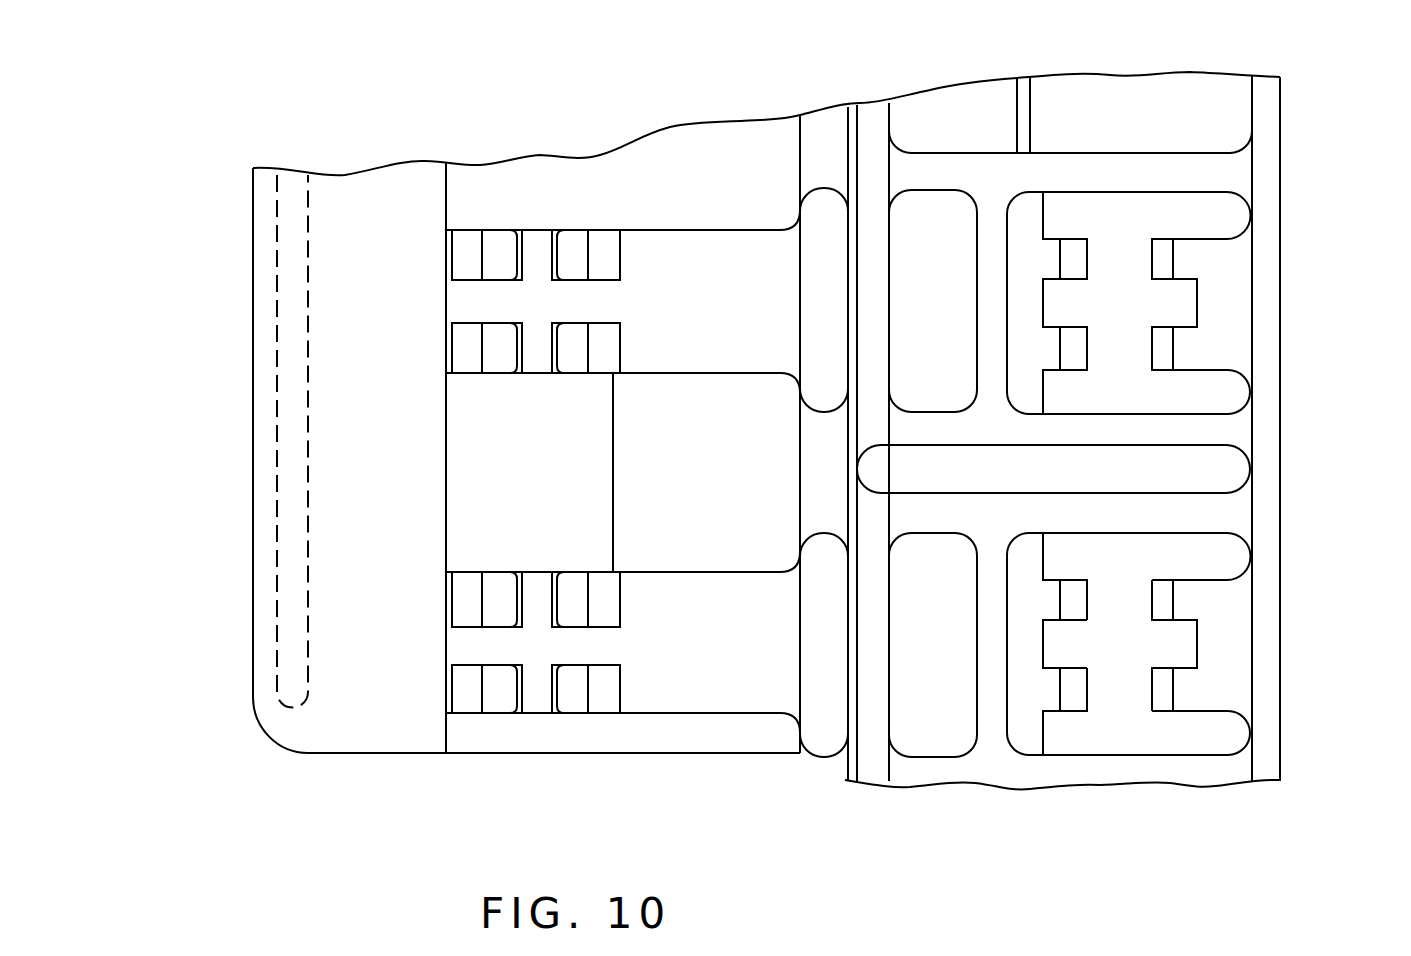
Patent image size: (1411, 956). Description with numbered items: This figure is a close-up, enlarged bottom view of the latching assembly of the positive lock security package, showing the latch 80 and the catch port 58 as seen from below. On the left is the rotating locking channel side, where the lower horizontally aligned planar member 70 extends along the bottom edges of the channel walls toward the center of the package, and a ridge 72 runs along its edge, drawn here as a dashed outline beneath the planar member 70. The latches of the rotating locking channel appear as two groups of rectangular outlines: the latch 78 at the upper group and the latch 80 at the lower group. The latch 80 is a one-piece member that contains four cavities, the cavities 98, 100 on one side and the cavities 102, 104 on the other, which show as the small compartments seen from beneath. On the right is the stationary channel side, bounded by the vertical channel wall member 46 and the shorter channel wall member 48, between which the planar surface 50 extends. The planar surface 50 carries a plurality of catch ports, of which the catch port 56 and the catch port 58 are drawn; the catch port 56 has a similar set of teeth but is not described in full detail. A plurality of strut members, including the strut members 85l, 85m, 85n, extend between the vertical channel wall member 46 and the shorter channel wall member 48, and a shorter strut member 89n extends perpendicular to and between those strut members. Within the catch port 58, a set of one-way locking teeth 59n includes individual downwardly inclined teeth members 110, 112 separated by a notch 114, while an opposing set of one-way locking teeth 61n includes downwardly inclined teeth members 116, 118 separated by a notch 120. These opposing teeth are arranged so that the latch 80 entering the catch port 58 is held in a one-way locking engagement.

The vertical channel wall member 46 is at (1265, 343).
The shorter channel wall member 48 is at (870, 267).
The planar surface 50 is at (1140, 112).
The catch port 56 is at (1175, 308).
The catch port 58 is at (1118, 734).
The one-way locking teeth 59n is at (1197, 715).
The opposing one-way locking teeth 61n is at (1053, 725).
The lower horizontally aligned planar member 70 is at (287, 753).
The ridge 72 is at (282, 715).
The latch 78 is at (640, 215).
The latch 80 is at (622, 643).
The strut member 85l is at (1233, 172).
The strut member 85m is at (1217, 470).
The strut member 85n is at (1245, 775).
The shorter strut member 89n is at (992, 732).
The cavity 98 is at (575, 588).
The cavity 100 is at (573, 685).
The cavity 102 is at (504, 583).
The cavity 104 is at (495, 682).
The downwardly inclined teeth member 110 is at (1162, 692).
The downwardly inclined teeth member 112 is at (1162, 594).
The notch 114 is at (1170, 647).
The downwardly inclined teeth member 116 is at (1070, 687).
The downwardly inclined teeth member 118 is at (1097, 553).
The notch 120 is at (1055, 642).